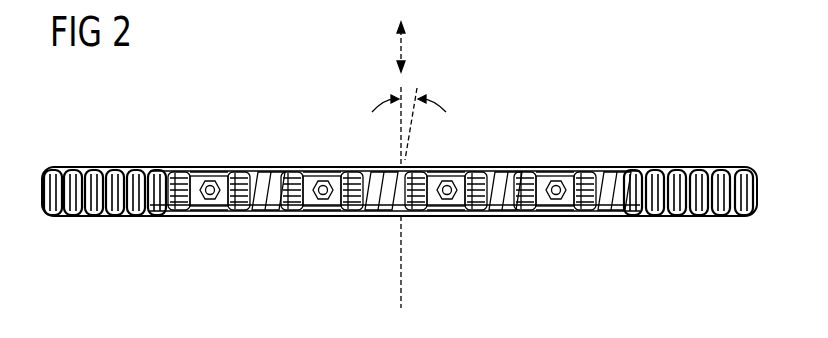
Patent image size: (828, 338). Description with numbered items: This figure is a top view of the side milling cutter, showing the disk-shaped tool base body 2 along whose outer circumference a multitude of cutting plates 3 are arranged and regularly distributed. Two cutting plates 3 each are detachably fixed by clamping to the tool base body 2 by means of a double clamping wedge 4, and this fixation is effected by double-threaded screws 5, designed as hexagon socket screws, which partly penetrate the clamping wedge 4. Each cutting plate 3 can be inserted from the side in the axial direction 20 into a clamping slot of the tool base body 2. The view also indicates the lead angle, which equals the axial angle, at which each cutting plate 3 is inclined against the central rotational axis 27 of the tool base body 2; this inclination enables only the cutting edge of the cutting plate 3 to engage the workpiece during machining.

The tool base body 2 is at (493, 217).
The cutting plate 3 is at (284, 220).
The double clamping wedge 4 is at (313, 218).
The double-threaded screw 5 is at (449, 184).
The axial direction 20 is at (398, 49).
The central rotational axis 27 is at (398, 263).